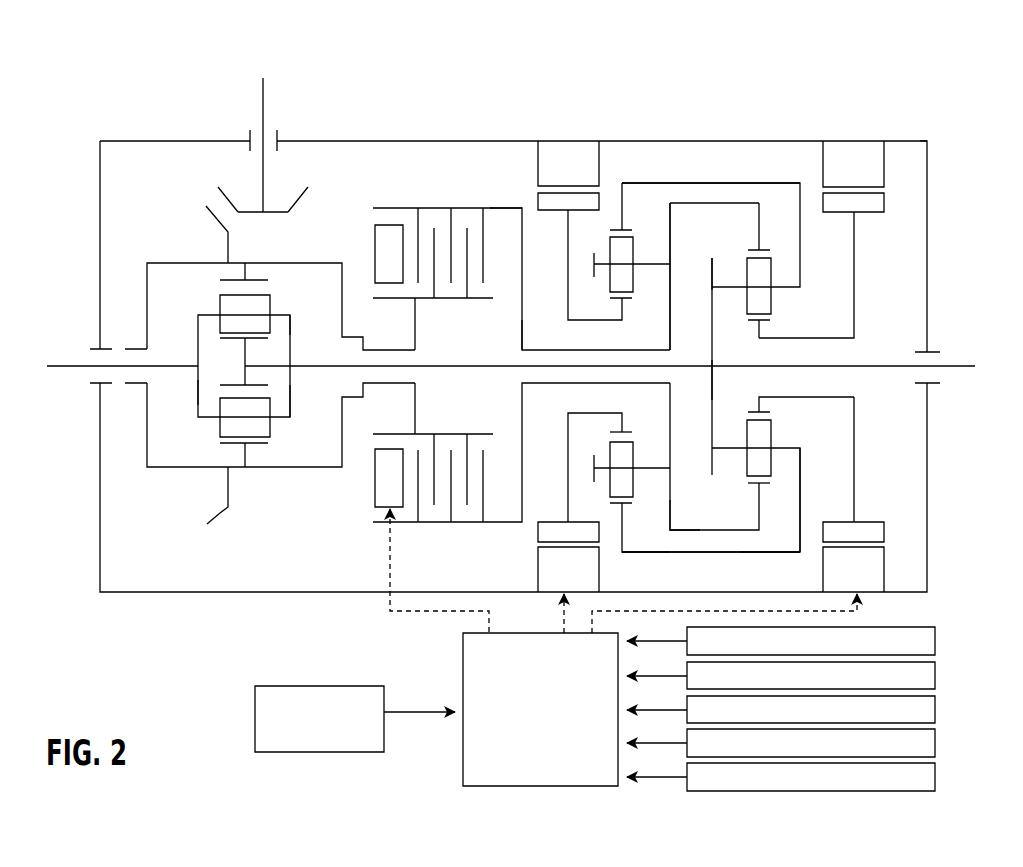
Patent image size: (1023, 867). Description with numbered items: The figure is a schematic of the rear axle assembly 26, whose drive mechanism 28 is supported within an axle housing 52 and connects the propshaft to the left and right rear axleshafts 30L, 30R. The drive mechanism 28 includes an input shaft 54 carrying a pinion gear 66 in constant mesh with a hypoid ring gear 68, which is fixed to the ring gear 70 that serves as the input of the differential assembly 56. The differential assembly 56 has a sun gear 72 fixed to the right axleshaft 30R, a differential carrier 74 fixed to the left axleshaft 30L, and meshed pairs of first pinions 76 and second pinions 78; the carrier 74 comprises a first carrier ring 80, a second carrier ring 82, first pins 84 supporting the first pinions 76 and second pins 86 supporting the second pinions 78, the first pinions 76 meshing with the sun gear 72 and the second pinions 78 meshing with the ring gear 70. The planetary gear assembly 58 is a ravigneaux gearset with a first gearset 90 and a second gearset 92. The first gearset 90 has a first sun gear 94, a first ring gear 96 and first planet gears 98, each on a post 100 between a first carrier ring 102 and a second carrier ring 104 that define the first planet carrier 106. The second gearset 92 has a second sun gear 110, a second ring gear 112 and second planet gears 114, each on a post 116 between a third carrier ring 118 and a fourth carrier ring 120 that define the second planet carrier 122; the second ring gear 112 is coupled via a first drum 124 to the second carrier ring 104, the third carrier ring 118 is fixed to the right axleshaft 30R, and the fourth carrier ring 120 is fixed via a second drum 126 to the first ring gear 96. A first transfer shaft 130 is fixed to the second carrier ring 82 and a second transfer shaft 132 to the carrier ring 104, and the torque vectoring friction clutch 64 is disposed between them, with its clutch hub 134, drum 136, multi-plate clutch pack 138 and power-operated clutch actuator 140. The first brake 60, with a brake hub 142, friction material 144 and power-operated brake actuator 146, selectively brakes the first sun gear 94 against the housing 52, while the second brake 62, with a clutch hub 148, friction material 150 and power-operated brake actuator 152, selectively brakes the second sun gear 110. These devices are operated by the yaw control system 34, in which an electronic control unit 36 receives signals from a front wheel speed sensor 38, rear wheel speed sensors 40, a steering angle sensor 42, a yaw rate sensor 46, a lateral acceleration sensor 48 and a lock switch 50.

The rear axle assembly 26 is at (902, 78).
The drive mechanism 28 is at (683, 133).
The left rear axleshaft 30L is at (62, 360).
The right rear axleshaft 30R is at (963, 356).
The yaw control system 34 is at (466, 799).
The electronic control unit 36 is at (473, 665).
The front wheel speed sensor 38 is at (937, 644).
The rear wheel speed sensors 40 is at (937, 679).
The steering angle sensor 42 is at (937, 713).
The yaw rate sensor 46 is at (937, 746).
The lateral acceleration sensor 48 is at (937, 780).
The lock switch 50 is at (373, 694).
The axle housing 52 is at (927, 258).
The input shaft 54 is at (265, 104).
The differential assembly 56 is at (148, 476).
The planetary gear assembly 58 is at (733, 160).
The first brake 60 is at (548, 140).
The second brake 62 is at (875, 137).
The torque vectoring friction clutch 64 is at (426, 203).
The pinion gear 66 is at (298, 200).
The hypoid ring gear 68 is at (225, 512).
The ring gear 70 is at (245, 455).
The sun gear 72 is at (245, 354).
The differential carrier 74 is at (196, 327).
The first pinions 76 is at (268, 301).
The second pinions 78 is at (220, 425).
The first carrier ring 80 is at (198, 393).
The second carrier ring 82 is at (290, 397).
The first pins 84 is at (281, 318).
The second pins 86 is at (290, 420).
The first gearset 90 is at (647, 462).
The second gearset 92 is at (731, 338).
The first sun gear 94 is at (612, 428).
The first ring gear 96 is at (620, 203).
The first planet gears 98 is at (613, 280).
The post 100 is at (596, 456).
The first carrier ring 102 is at (594, 262).
The second carrier ring 104 is at (672, 500).
The first planet carrier 106 is at (660, 516).
The second sun gear 110 is at (765, 322).
The second ring gear 112 is at (757, 505).
The second planet gears 114 is at (765, 431).
The post 116 is at (722, 447).
The third carrier ring 118 is at (705, 383).
The fourth carrier ring 120 is at (802, 498).
The second planet carrier 122 is at (722, 270).
The first drum 124 is at (685, 202).
The second drum 126 is at (755, 552).
The first transfer shaft 130 is at (390, 350).
The second transfer shaft 132 is at (540, 350).
The clutch hub 134 is at (417, 312).
The drum 136 is at (499, 208).
The multi-plate clutch pack 138 is at (468, 453).
The power-operated clutch actuator 140 is at (375, 485).
The brake hub 142 is at (568, 246).
The friction material 144 is at (547, 530).
The power-operated brake actuator 146 is at (547, 570).
The clutch hub 148 is at (854, 268).
The friction material 150 is at (877, 199).
The power-operated brake actuator 152 is at (878, 570).